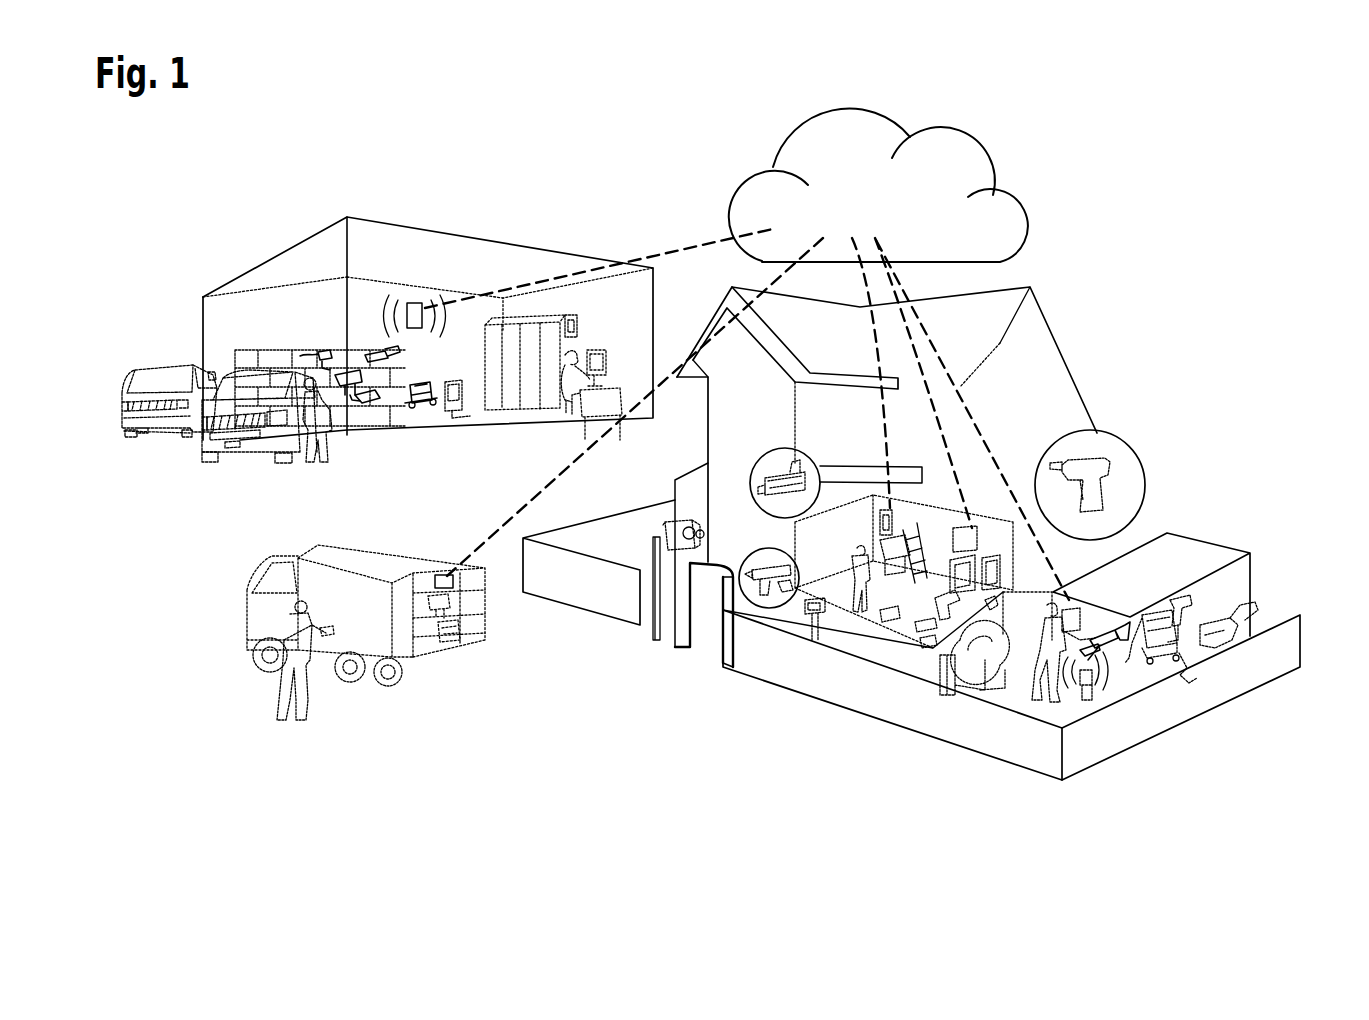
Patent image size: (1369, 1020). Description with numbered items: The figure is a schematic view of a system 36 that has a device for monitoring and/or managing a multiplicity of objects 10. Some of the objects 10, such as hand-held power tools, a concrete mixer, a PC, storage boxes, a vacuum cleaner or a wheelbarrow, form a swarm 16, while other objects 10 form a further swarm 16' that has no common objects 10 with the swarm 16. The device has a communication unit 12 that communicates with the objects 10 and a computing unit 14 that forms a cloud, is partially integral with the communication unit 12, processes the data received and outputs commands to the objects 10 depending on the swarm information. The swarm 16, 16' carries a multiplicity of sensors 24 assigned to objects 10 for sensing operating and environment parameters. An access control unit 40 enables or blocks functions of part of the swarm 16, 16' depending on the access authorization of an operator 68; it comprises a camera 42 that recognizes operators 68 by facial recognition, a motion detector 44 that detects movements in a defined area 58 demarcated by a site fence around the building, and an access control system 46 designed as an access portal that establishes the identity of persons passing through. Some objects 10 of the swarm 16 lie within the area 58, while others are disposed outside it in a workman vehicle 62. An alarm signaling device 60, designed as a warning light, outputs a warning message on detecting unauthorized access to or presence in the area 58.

The object 10 is at (415, 302).
The communication unit 12 is at (688, 235).
The computing unit 14 is at (955, 151).
The swarm 16 is at (987, 533).
The further swarm 16' is at (428, 280).
The sensor 24 is at (570, 313).
The system 36 is at (1133, 190).
The access control unit 40 is at (686, 673).
The camera 42 is at (385, 243).
The motion detector 44 is at (812, 614).
The access control system 46 is at (680, 647).
The defined area 58 is at (1198, 502).
The alarm signaling device 60 is at (1060, 670).
The workman vehicle 62 is at (383, 559).
The operator 68 is at (578, 348).